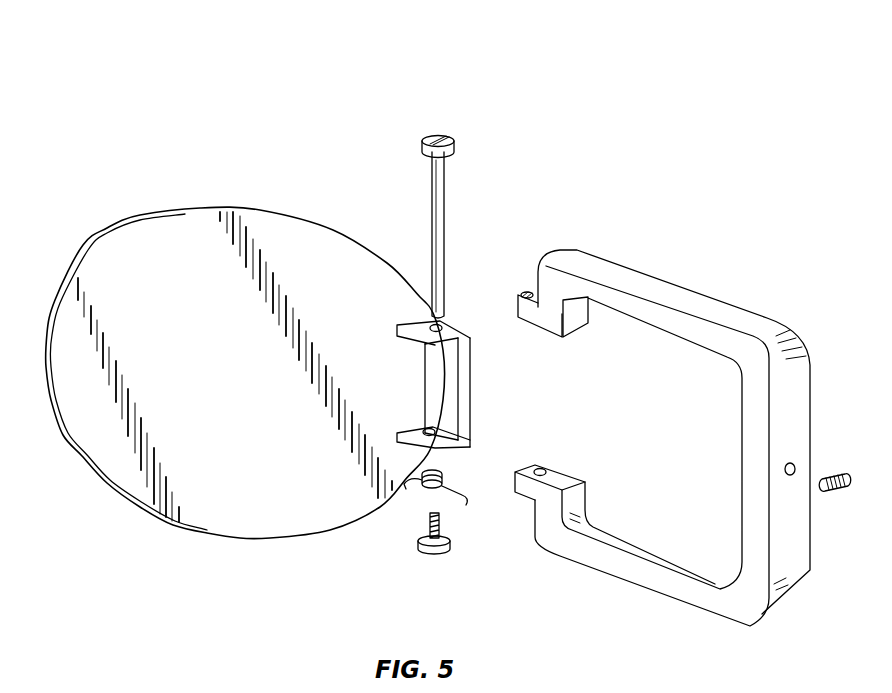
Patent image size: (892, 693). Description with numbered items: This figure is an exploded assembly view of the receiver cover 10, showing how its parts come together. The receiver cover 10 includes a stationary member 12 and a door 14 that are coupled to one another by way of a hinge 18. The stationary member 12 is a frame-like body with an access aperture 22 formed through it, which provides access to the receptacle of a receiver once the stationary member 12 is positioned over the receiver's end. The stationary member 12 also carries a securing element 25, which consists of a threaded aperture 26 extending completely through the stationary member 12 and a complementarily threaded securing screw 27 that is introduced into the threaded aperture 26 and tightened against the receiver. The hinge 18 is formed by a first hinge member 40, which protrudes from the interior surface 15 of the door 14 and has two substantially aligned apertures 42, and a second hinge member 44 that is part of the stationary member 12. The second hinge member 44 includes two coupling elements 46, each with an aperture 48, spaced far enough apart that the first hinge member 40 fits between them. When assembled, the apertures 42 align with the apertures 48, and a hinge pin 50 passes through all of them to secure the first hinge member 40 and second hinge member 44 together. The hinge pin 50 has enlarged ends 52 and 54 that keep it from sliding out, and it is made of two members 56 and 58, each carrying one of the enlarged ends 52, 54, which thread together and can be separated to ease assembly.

The receiver cover 10 is at (160, 91).
The stationary member 12 is at (670, 437).
The door 14 is at (243, 345).
The interior surface 15 is at (162, 298).
The hinge 18 is at (477, 124).
The access aperture 22 is at (652, 520).
The securing element 25 is at (751, 460).
The threaded aperture 26 is at (785, 469).
The securing screw 27 is at (823, 484).
The first hinge member 40 is at (420, 367).
The apertures 42 is at (442, 326).
The second hinge member 44 is at (523, 502).
The coupling elements 46 is at (546, 367).
The apertures 48 is at (533, 298).
The hinge pin 50 is at (439, 196).
The enlarged end 52 is at (455, 152).
The enlarged end 54 is at (422, 565).
The member 56 is at (447, 221).
The member 58 is at (438, 561).